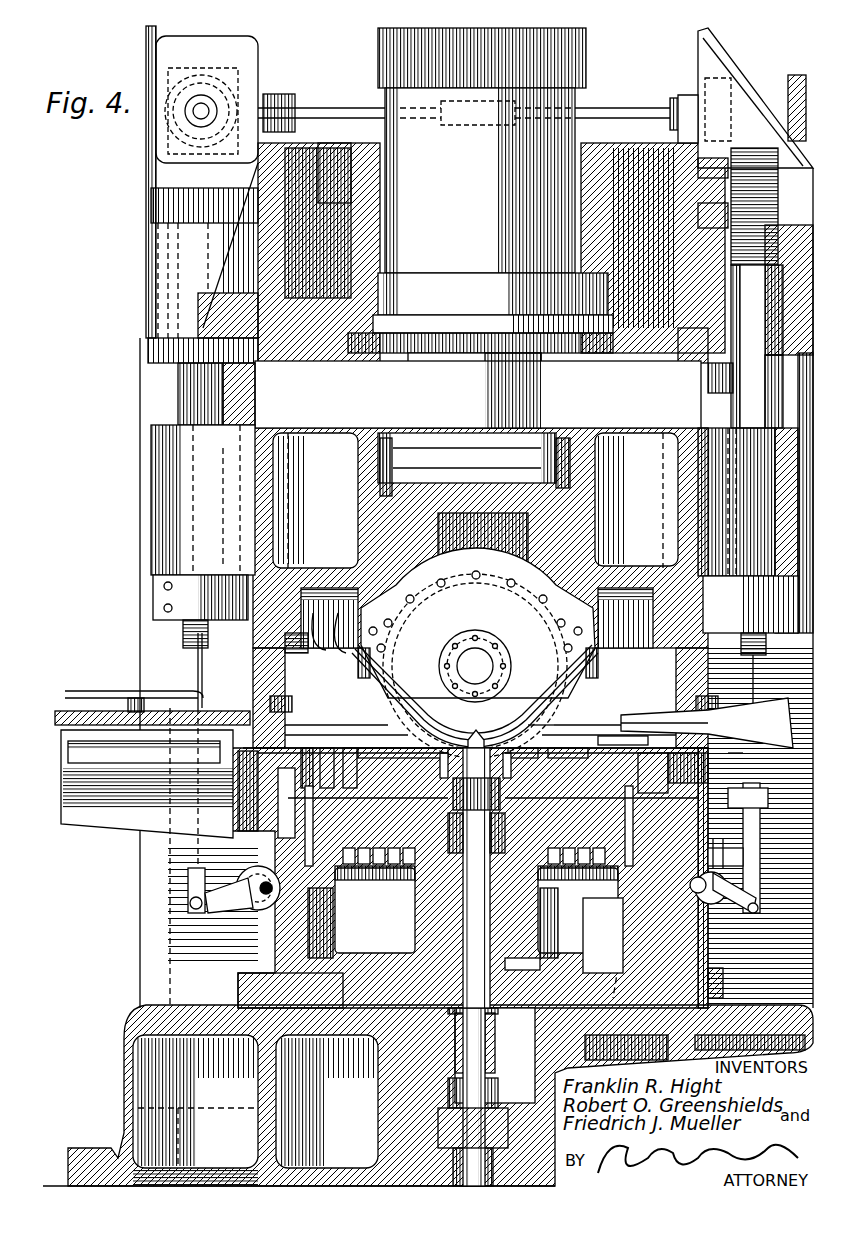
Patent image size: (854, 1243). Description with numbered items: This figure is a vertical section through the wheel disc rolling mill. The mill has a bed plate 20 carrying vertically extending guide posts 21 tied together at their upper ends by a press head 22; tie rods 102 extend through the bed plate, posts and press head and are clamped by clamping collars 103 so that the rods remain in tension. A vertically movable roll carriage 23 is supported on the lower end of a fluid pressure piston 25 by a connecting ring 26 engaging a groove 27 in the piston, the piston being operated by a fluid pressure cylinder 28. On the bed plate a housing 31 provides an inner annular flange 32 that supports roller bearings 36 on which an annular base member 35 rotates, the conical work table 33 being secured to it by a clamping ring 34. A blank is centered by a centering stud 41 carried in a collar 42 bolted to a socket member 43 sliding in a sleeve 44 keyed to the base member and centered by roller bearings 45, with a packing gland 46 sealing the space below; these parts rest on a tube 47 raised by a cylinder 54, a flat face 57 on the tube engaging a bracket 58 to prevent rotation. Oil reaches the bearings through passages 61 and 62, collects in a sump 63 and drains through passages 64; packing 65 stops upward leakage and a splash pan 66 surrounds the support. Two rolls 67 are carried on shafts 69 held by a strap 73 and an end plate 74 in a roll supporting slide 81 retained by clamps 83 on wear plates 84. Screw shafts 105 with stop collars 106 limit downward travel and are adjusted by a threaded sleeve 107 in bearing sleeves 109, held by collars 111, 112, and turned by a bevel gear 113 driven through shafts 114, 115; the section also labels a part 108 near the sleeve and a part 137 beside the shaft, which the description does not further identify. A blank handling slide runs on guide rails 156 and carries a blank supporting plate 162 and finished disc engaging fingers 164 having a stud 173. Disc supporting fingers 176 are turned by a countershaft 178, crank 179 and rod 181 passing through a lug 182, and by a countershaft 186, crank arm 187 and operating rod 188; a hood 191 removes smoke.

The bed plate 20 is at (108, 1036).
The guide posts 21 is at (135, 433).
The press head 22 is at (632, 150).
The roll carriage 23 is at (585, 450).
The fluid pressure piston 25 is at (522, 390).
The connecting ring 26 is at (553, 445).
The groove 27 is at (443, 442).
The fluid pressure cylinder 28 is at (520, 188).
The housing 31 is at (245, 918).
The inner annular flange 32 is at (571, 924).
The work table 33 is at (320, 740).
The clamping ring 34 is at (650, 762).
The annular base member 35 is at (299, 740).
The roller bearings 36 is at (476, 910).
The centering stud 41 is at (352, 728).
The collar 42 is at (343, 740).
The socket member 43 is at (527, 748).
The sleeve 44 is at (560, 748).
The roller bearings 45 is at (540, 922).
The packing gland 46 is at (490, 1004).
The tube 47 is at (505, 955).
The cylinder 54 is at (485, 1145).
The flat face 57 is at (480, 1025).
The bracket 58 is at (487, 1050).
The passage 61 is at (243, 973).
The passage 62 is at (405, 927).
The sump 63 is at (610, 962).
The passages 64 is at (720, 968).
The packing 65 is at (650, 757).
The splash pan 66 is at (590, 728).
The rolls 67 is at (535, 718).
The shaft 69 is at (478, 645).
The strap 73 is at (545, 690).
The end plate 74 is at (400, 665).
The roll supporting slide 81 is at (320, 648).
The clamps 83 is at (355, 668).
The wear plates 84 is at (300, 648).
The tie rods 102 is at (130, 1065).
The clamping collars 103 is at (140, 1108).
The screw shafts 105 is at (180, 386).
The stop collars 106 is at (160, 583).
The sleeve 107 is at (700, 240).
The spring seat 108 is at (705, 368).
The bearing sleeves 109 is at (675, 335).
The collar 111 is at (695, 203).
The collar 112 is at (722, 405).
The bevel gear 113 is at (695, 153).
The shaft 114 is at (330, 100).
The shaft 115 is at (192, 108).
The column 137 is at (305, 150).
The guide rails 156 is at (75, 806).
The blank supporting plate 162 is at (55, 722).
The finished disc engaging fingers 164 is at (88, 683).
The stud 173 is at (125, 690).
The disc supporting fingers 176 is at (284, 693).
The countershaft 178 is at (235, 906).
The crank 179 is at (180, 878).
The rod 181 is at (190, 653).
The lug 182 is at (760, 785).
The countershaft 186 is at (705, 897).
The crank arm 187 is at (735, 905).
The operating rod 188 is at (738, 741).
The hood 191 is at (635, 708).